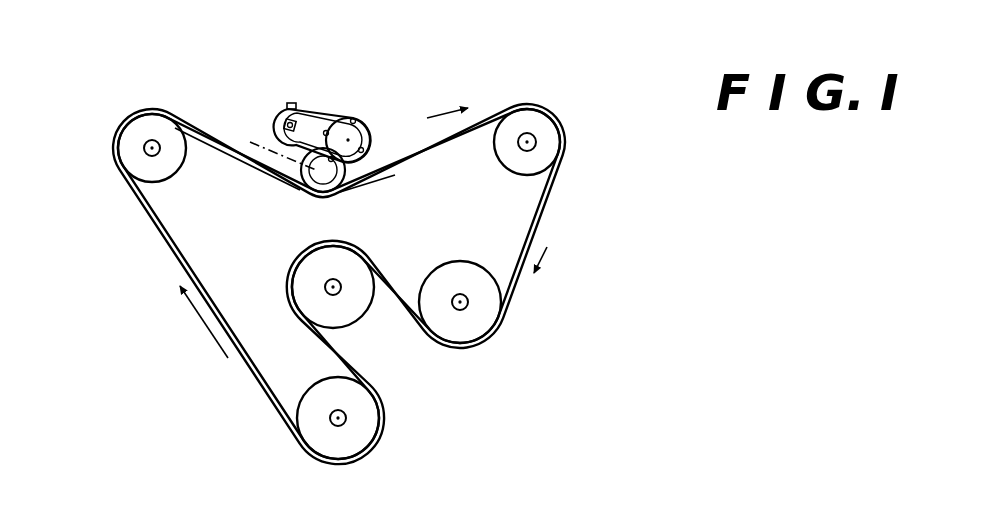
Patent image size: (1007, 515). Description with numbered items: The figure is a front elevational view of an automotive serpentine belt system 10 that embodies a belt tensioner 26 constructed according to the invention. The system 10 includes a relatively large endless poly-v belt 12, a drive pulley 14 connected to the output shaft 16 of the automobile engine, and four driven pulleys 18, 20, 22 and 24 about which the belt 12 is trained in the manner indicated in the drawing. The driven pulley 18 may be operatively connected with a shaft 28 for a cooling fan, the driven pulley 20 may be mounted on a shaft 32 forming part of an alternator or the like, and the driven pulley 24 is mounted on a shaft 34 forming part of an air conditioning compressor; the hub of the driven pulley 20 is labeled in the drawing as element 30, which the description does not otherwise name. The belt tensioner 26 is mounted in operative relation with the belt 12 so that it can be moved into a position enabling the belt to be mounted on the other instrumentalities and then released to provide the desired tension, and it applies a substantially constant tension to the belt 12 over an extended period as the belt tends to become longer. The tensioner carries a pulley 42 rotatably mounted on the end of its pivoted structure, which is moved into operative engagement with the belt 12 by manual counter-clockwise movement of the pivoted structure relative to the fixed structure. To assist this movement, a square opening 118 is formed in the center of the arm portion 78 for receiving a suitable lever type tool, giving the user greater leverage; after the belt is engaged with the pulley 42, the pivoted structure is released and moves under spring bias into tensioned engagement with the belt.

The automotive serpentine belt system 10 is at (540, 42).
The endless poly-v belt 12 is at (542, 217).
The drive pulley 14 is at (340, 262).
The output shaft 16 is at (341, 290).
The driven pulley 18 is at (357, 441).
The driven pulley 20 is at (128, 140).
The driven pulley 22 is at (549, 150).
The driven pulley 24 is at (500, 322).
The belt tensioner 26 is at (383, 75).
The shaft 28 is at (348, 418).
The shaft of pulley 20 30 is at (160, 150).
The shaft 32 is at (527, 151).
The shaft 34 is at (469, 302).
The pulley 42 is at (390, 168).
The arm portion 78 is at (308, 189).
The square opening 118 is at (308, 124).